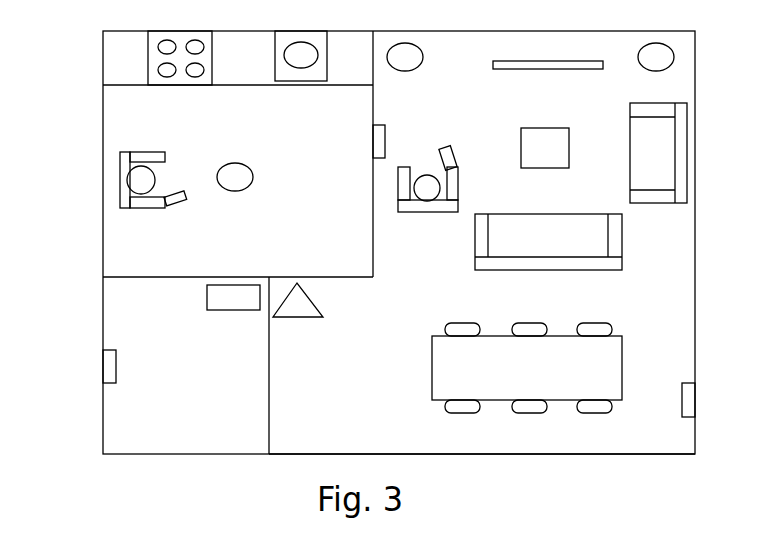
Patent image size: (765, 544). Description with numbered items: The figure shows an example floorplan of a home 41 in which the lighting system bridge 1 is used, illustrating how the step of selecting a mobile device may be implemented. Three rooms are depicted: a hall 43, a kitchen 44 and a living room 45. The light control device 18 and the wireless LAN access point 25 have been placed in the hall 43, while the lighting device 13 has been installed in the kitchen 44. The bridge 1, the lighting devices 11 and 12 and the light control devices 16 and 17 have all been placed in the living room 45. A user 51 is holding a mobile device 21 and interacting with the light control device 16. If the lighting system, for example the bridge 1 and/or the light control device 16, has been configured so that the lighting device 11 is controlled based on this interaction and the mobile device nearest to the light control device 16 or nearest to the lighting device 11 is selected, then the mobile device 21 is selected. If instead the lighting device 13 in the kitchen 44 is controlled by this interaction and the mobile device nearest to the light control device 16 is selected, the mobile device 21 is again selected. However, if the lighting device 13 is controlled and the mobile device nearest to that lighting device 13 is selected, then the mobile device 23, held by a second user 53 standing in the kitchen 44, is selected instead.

The bridge 1 is at (298, 300).
The lighting device 11 is at (405, 57).
The lighting device 12 is at (656, 57).
The lighting device 13 is at (235, 177).
The light control device 16 is at (355, 148).
The light control device 17 is at (666, 407).
The light control device 18 is at (136, 366).
The mobile device 21 is at (439, 134).
The mobile device 23 is at (185, 224).
The wireless LAN access point 25 is at (233, 297).
The home 41 is at (67, 127).
The hall 43 is at (188, 365).
The kitchen 44 is at (238, 154).
The living room 45 is at (482, 442).
The user 51 is at (428, 219).
The user 53 is at (118, 184).